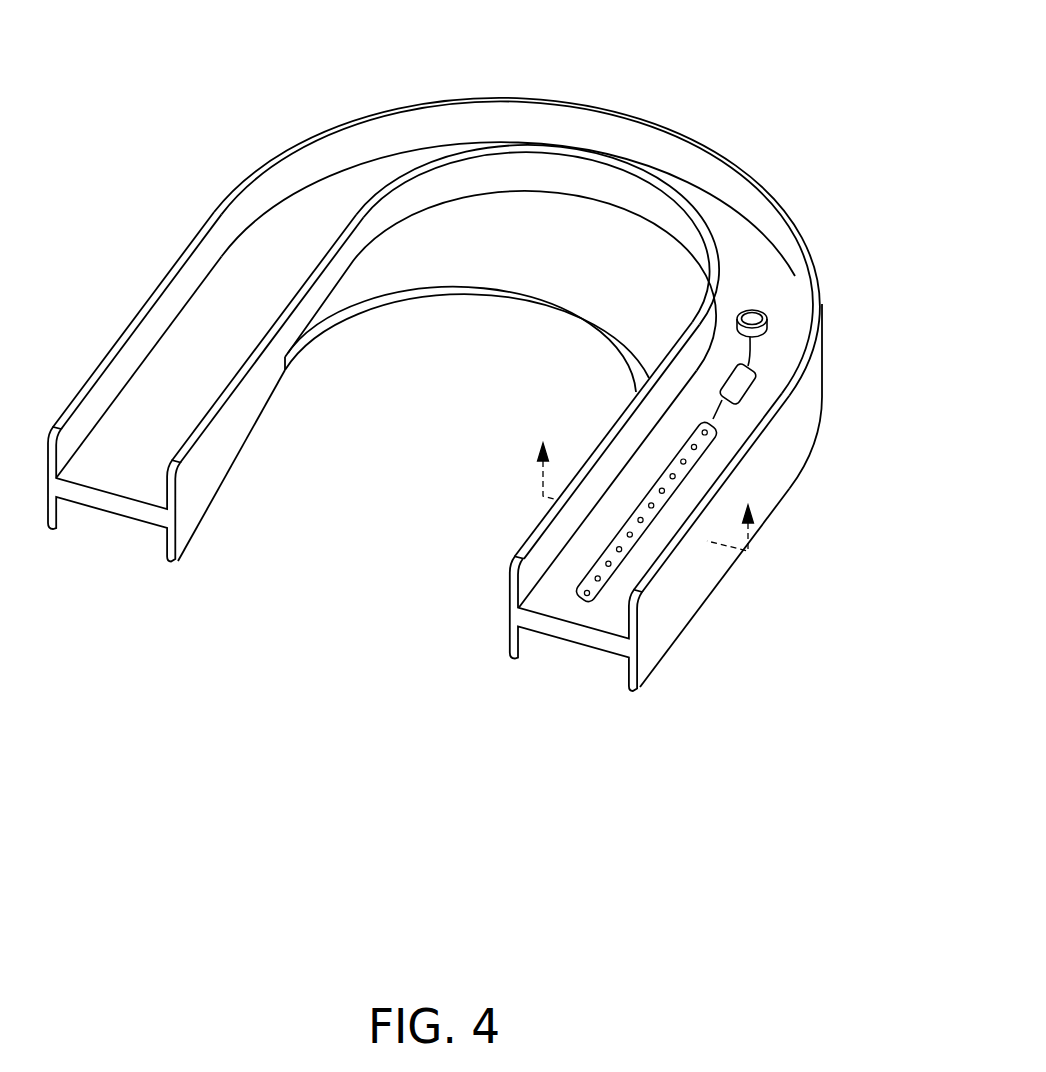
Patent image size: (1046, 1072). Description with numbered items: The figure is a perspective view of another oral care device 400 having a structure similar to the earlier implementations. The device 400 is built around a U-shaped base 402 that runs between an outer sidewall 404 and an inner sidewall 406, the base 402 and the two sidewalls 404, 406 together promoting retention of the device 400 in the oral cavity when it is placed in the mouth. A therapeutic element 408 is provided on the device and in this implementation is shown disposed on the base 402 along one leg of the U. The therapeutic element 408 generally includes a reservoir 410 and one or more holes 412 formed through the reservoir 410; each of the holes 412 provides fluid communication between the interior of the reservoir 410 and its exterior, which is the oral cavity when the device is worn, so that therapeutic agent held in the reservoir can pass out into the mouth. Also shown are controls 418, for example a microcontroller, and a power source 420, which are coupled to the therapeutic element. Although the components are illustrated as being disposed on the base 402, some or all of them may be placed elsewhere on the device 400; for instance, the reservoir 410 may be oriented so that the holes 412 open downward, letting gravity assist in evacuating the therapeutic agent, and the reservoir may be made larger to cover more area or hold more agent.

The device 400 is at (462, 357).
The U-shaped base 402 is at (150, 432).
The outer sidewall 404 is at (808, 395).
The inner sidewall 406 is at (215, 463).
The therapeutic element 408 is at (864, 528).
The reservoir 410 is at (577, 597).
The holes 412 is at (607, 565).
The controls 418 is at (738, 385).
The power source 420 is at (757, 310).